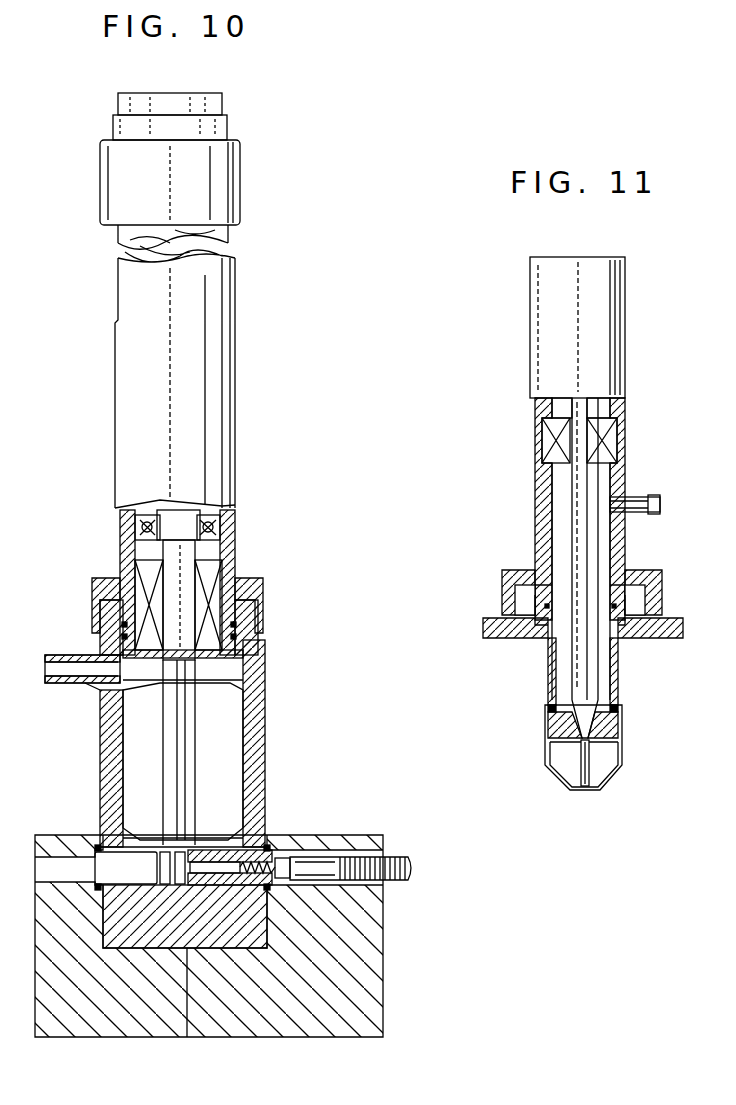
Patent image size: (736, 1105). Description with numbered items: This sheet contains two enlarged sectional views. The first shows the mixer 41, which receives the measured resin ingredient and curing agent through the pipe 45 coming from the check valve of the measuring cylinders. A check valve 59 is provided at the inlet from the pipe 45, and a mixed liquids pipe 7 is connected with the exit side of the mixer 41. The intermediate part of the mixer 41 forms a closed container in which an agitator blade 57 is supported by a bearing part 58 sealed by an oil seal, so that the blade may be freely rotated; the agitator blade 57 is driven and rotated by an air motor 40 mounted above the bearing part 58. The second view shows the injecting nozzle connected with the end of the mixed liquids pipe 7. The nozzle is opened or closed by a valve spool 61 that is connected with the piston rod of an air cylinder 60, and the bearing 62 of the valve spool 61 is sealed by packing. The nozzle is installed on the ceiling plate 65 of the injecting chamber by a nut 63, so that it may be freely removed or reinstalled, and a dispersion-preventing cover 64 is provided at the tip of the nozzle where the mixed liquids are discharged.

In FIG. 10, the air motor 40 is at (233, 178).
In FIG. 10, the mixer 41 is at (213, 678).
In FIG. 10, the bearing part 58 is at (212, 572).
In FIG. 10, the agitator blade 57 is at (232, 731).
In FIG. 10, the mixed liquids pipe 7 is at (57, 655).
In FIG. 11, the mixed liquids pipe 7 is at (650, 497).
In FIG. 10, the check valve 59 is at (200, 887).
In FIG. 10, the pipe 45 is at (398, 882).
In FIG. 11, the air cylinder 60 is at (618, 347).
In FIG. 11, the bearing 62 is at (615, 440).
In FIG. 11, the valve spool 61 is at (585, 540).
In FIG. 11, the nut 63 is at (655, 569).
In FIG. 11, the ceiling plate 65 is at (672, 618).
In FIG. 11, the dispersion-preventing cover 64 is at (625, 765).